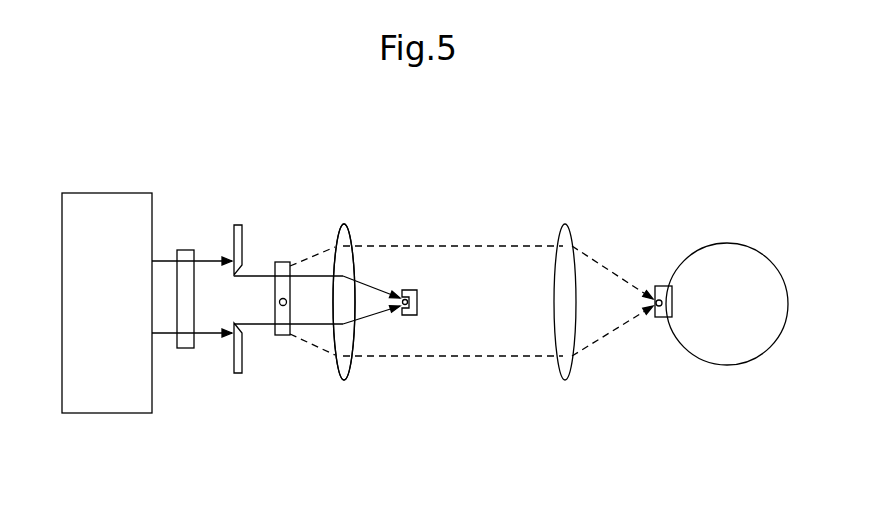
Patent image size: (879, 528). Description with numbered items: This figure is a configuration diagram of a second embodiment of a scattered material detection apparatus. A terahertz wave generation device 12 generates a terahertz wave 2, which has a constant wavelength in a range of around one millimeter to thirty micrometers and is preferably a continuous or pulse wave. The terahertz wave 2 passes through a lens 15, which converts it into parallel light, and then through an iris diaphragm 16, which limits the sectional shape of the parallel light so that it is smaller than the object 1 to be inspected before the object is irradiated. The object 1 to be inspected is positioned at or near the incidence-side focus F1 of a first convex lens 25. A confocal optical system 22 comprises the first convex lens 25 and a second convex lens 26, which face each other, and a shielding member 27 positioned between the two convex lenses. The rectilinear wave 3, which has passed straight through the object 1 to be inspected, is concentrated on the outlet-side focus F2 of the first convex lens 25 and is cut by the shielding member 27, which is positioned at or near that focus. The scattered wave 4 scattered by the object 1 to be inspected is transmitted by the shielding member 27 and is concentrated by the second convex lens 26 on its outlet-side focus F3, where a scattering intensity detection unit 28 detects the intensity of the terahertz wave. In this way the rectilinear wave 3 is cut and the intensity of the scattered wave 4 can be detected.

The terahertz wave generation device 12 is at (121, 313).
The terahertz wave 2 is at (166, 320).
The lens 15 is at (186, 250).
The iris diaphragm 16 is at (238, 225).
The object to be inspected 1 is at (284, 265).
The incidence-side focus F1 is at (282, 306).
The confocal optical system 22 is at (338, 208).
The first convex lens 25 is at (343, 378).
The rectilinear wave 3 is at (368, 282).
The shielding member 27 is at (417, 300).
The outlet-side focus F2 is at (404, 312).
The scattered wave 4 is at (483, 242).
The second convex lens 26 is at (565, 370).
The outlet-side focus F3 is at (658, 317).
The scattering intensity detection unit 28 is at (713, 270).